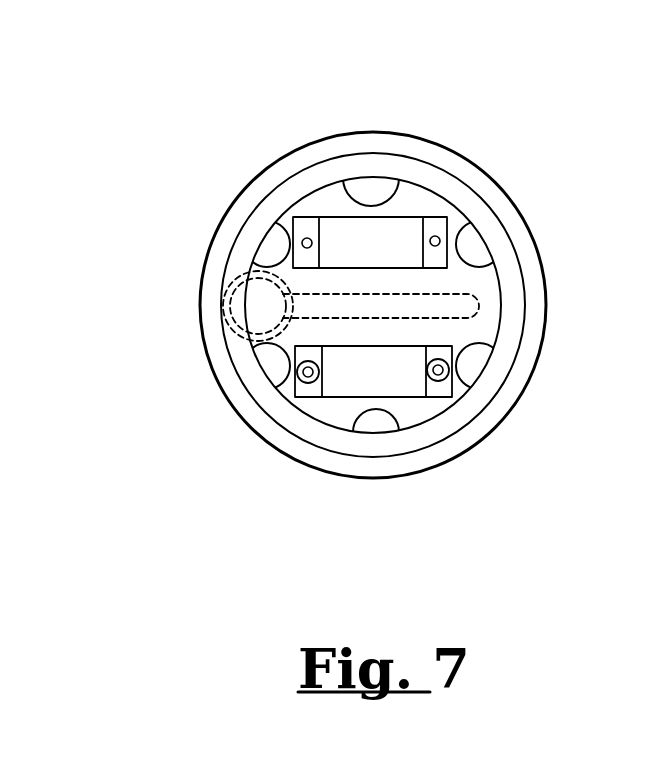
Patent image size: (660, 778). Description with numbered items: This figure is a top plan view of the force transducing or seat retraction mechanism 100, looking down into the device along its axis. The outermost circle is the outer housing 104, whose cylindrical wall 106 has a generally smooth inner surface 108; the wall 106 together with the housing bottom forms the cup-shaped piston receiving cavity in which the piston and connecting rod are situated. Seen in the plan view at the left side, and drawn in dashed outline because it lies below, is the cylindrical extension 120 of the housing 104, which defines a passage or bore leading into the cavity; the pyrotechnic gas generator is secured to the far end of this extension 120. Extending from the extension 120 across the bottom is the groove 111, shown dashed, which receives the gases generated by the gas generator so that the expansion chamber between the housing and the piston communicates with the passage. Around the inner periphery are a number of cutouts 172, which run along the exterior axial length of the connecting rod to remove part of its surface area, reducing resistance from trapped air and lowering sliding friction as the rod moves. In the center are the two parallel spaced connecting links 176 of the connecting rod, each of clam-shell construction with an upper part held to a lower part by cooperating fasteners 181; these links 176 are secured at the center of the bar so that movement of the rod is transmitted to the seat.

The seat retraction mechanism 100 is at (108, 229).
The outer housing 104 is at (548, 308).
The cylindrical wall 106 is at (518, 378).
The inner surface 108 is at (450, 398).
The groove 111 is at (481, 300).
The cylindrical extension 120 is at (258, 316).
The cutouts 172 is at (268, 245).
The connecting links 176 is at (357, 240).
The fasteners 181 is at (436, 236).